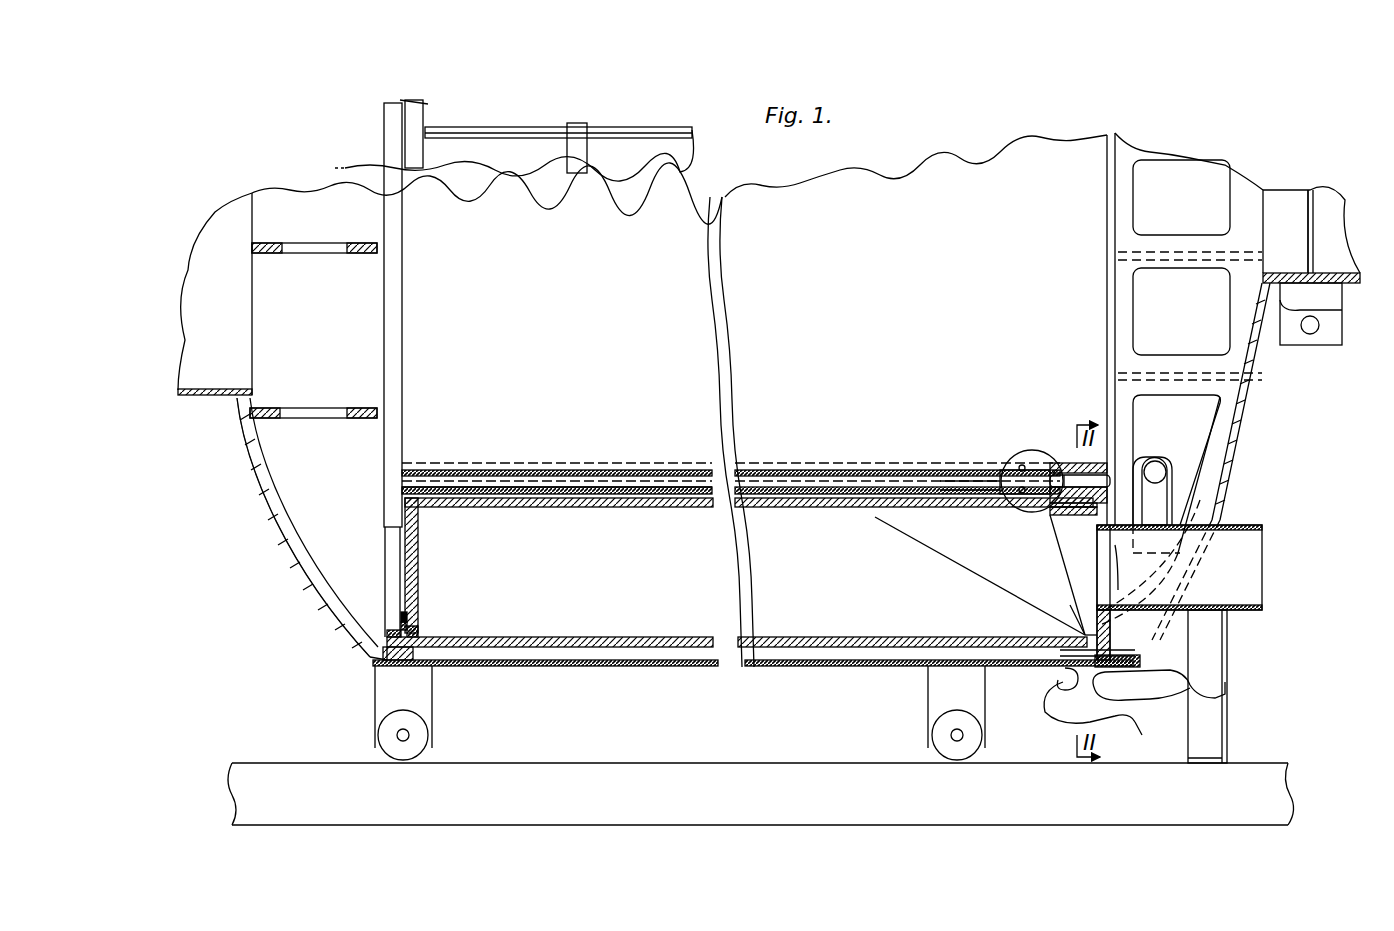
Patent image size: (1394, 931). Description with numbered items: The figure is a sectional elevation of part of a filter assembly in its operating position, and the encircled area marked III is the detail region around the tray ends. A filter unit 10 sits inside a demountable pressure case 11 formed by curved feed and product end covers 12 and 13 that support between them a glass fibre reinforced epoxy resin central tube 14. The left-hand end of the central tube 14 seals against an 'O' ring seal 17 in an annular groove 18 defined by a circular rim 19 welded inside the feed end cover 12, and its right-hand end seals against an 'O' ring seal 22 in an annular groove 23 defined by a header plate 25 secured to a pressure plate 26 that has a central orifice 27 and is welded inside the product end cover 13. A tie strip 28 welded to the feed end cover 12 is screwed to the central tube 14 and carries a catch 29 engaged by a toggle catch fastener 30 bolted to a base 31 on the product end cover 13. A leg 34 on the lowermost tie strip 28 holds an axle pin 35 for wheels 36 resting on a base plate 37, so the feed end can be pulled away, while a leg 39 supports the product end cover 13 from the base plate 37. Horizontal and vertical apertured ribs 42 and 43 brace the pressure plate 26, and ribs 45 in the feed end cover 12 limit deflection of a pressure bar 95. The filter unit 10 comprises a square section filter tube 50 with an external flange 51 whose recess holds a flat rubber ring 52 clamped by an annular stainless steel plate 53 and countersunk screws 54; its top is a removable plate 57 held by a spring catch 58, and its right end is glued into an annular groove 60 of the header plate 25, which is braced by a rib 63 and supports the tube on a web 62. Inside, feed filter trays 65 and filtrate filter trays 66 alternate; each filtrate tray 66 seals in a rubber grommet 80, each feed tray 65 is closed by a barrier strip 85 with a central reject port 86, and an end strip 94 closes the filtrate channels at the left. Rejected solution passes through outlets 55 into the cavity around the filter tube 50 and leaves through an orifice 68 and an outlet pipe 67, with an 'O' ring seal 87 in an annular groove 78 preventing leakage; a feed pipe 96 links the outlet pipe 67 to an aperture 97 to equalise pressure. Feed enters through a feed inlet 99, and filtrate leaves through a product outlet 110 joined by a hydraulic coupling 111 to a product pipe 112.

The filter unit 10 is at (376, 430).
The demountable pressure case 11 is at (262, 523).
The feed end cover 12 is at (276, 532).
The product end cover 13 is at (1240, 468).
The central tube 14 is at (810, 650).
The 'O' ring seal 17 is at (383, 662).
The annular groove 18 is at (385, 658).
The circular rim 19 is at (390, 634).
The 'O' ring seal 22 is at (1082, 688).
The annular groove 23 is at (1085, 633).
The header plate 25 is at (1130, 643).
The pressure plate 26 is at (1175, 585).
The central orifice 27 is at (1107, 398).
The tie strip 28 is at (850, 668).
The catch 29 is at (1030, 668).
The toggle catch fastener 30 is at (1125, 740).
The base 31 is at (1135, 665).
The leg 34 is at (432, 700).
The axle pin 35 is at (428, 728).
The wheel 36 is at (409, 735).
The base plate 37 is at (1245, 770).
The leg 39 is at (1227, 718).
The horizontally directed apertured rib 42 is at (1230, 490).
The vertically directed apertured rib 43 is at (1258, 390).
The horizontally directed apertured rib 45 is at (365, 255).
The filter tube 50 is at (612, 500).
The external flange 51 is at (418, 575).
The flat rubber ring 52 is at (412, 633).
The annular stainless steel plate 53 is at (401, 614).
The countersunk screw 54 is at (401, 625).
The outlet 55 is at (1034, 564).
The removable plate 57 is at (650, 135).
The spring catch 58 is at (577, 128).
The annular groove 60 is at (1088, 515).
The web 62 is at (900, 520).
The rib 63 is at (1072, 582).
The feed filter tray 65 is at (970, 500).
The filtrate filter tray 66 is at (945, 495).
The outlet pipe 67 is at (1240, 612).
The orifice 68 is at (1074, 610).
The annular groove 78 is at (1091, 574).
The rubber grommet 80 is at (1060, 463).
The barrier strip 85 is at (1035, 466).
The central reject port 86 is at (1040, 487).
The 'O' ring seal 87 is at (1131, 567).
The end strip 94 is at (402, 488).
The pressure bar 95 is at (384, 480).
The feed pipe 96 is at (1160, 462).
The aperture 97 is at (1135, 460).
The feed inlet 99 is at (215, 396).
The product outlet 110 is at (1295, 273).
The hydraulic coupling 111 is at (1333, 330).
The product pipe 112 is at (1332, 262).
The detail circle III is at (1010, 462).